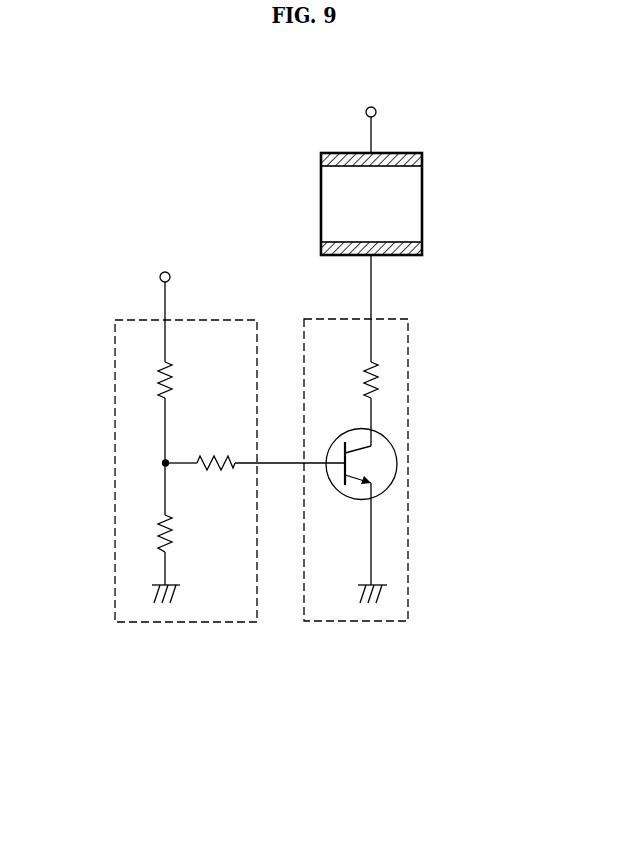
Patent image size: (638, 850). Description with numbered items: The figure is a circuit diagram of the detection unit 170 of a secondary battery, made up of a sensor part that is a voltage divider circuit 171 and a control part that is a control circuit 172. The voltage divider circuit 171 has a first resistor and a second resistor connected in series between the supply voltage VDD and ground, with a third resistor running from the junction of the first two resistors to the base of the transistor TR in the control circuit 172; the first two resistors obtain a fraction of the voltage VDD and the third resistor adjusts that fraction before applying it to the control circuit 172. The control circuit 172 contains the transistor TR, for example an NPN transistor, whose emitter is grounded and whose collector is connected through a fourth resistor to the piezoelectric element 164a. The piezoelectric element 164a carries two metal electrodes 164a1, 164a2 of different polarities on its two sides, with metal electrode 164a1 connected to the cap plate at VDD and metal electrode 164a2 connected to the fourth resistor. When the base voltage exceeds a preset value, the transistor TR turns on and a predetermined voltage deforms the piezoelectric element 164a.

The piezoelectric element 164a is at (415, 204).
The metal electrode 164a1 is at (422, 158).
The metal electrode 164a2 is at (422, 248).
The detection unit 170 is at (312, 400).
The voltage divider circuit 171 is at (186, 463).
The control circuit 172 is at (345, 621).